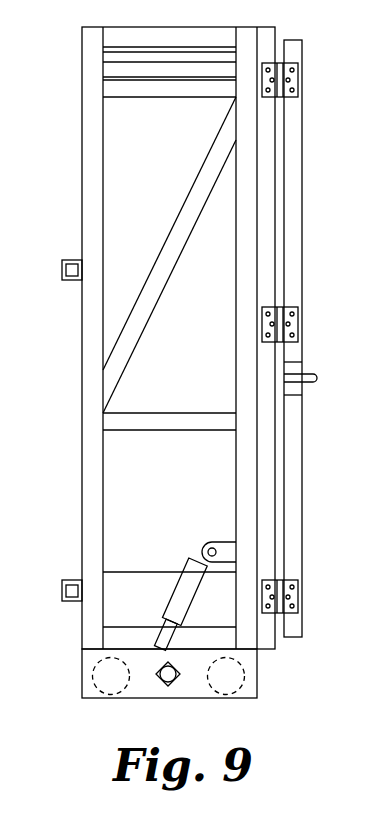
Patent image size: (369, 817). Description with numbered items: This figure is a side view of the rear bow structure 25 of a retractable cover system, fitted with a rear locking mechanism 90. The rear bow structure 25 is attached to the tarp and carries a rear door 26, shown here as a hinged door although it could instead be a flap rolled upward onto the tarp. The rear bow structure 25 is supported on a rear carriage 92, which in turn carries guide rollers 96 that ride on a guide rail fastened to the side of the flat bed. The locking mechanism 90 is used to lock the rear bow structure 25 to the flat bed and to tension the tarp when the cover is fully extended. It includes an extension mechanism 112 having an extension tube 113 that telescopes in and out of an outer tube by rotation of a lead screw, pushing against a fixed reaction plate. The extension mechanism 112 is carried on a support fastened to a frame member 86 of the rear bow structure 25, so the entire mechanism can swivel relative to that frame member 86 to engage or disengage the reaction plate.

The rear bow structure 25 is at (80, 148).
The rear door 26 is at (292, 52).
The frame member 86 is at (245, 459).
The locking mechanism 90 is at (128, 564).
The rear carriage 92 is at (247, 690).
The guide rollers 96 is at (103, 673).
The extension mechanism 112 is at (183, 588).
The extension tube 113 is at (160, 632).